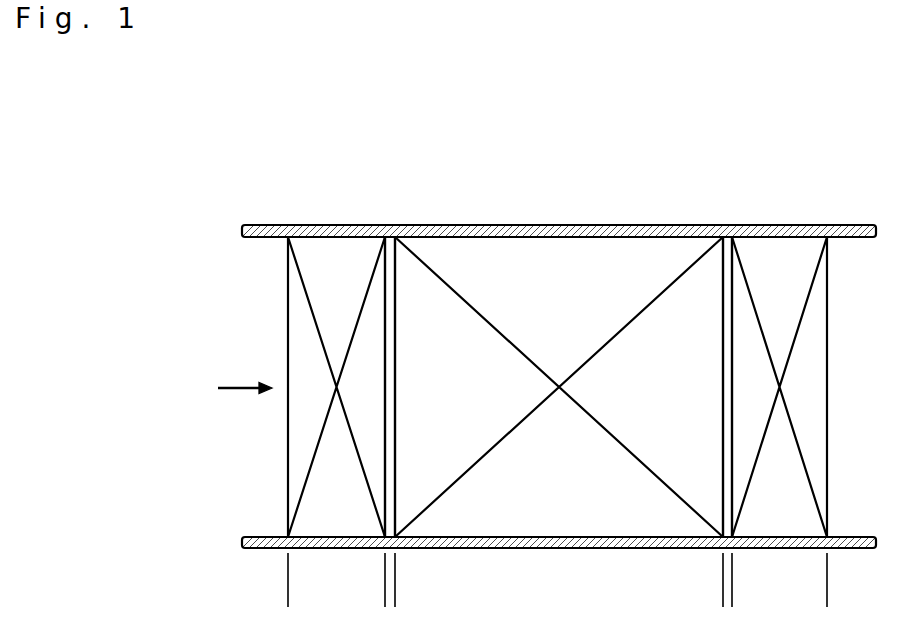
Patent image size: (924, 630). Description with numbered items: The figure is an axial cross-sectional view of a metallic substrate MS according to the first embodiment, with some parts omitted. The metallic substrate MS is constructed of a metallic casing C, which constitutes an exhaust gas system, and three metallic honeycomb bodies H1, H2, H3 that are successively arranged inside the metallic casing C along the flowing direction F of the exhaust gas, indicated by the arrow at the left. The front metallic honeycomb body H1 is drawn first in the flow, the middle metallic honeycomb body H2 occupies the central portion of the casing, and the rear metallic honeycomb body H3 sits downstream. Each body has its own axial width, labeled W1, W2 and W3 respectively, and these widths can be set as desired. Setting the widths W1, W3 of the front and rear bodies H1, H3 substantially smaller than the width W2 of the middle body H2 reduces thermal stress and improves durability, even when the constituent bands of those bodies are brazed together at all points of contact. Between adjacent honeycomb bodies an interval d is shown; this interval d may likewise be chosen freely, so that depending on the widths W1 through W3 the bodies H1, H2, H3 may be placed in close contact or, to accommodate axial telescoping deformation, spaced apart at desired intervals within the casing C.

The metallic substrate MS is at (559, 291).
The metallic casing C is at (614, 227).
The front metallic honeycomb body H1 is at (343, 257).
The middle metallic honeycomb body H2 is at (538, 265).
The rear metallic honeycomb body H3 is at (788, 250).
The interval between metallic honeycomb bodies d is at (392, 270).
The flowing direction of exhaust gas F is at (232, 390).
The width of front metallic honeycomb body W1 is at (385, 588).
The width of middle metallic honeycomb body W2 is at (723, 588).
The width of rear metallic honeycomb body W3 is at (827, 588).